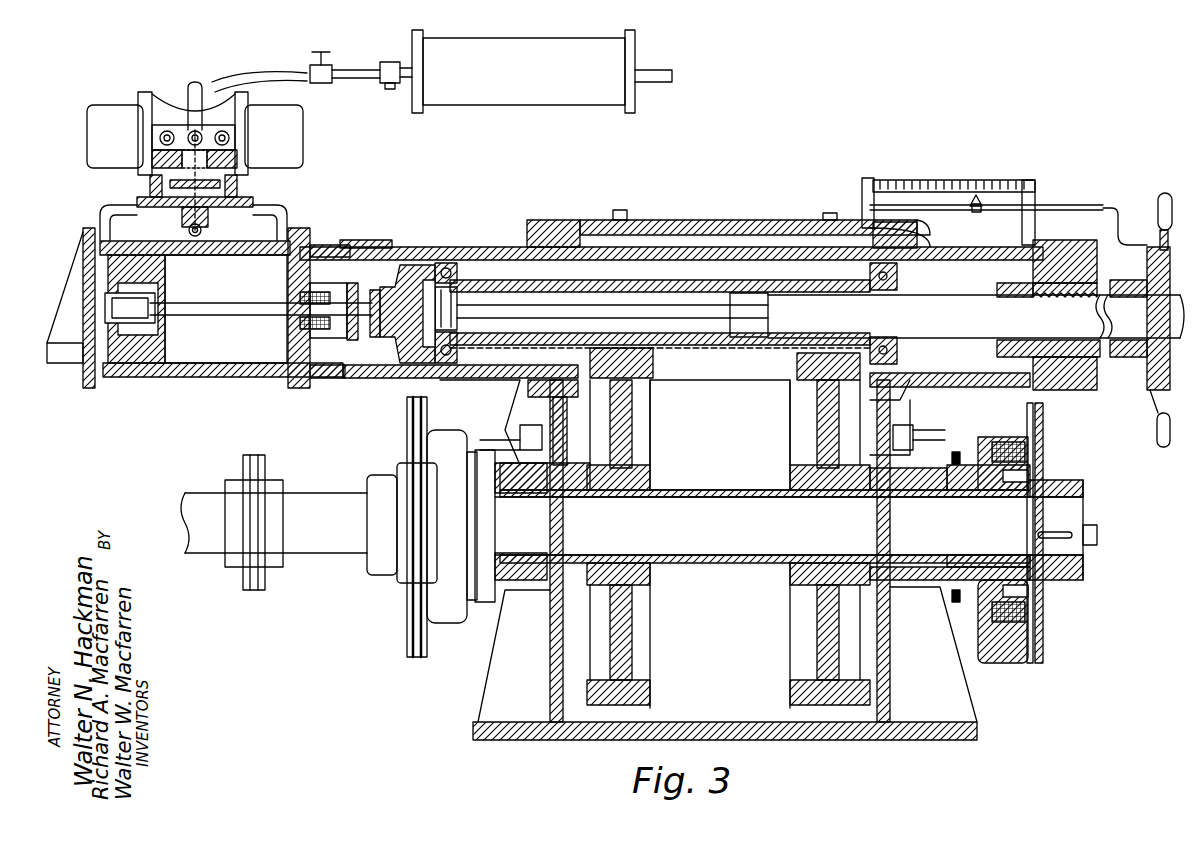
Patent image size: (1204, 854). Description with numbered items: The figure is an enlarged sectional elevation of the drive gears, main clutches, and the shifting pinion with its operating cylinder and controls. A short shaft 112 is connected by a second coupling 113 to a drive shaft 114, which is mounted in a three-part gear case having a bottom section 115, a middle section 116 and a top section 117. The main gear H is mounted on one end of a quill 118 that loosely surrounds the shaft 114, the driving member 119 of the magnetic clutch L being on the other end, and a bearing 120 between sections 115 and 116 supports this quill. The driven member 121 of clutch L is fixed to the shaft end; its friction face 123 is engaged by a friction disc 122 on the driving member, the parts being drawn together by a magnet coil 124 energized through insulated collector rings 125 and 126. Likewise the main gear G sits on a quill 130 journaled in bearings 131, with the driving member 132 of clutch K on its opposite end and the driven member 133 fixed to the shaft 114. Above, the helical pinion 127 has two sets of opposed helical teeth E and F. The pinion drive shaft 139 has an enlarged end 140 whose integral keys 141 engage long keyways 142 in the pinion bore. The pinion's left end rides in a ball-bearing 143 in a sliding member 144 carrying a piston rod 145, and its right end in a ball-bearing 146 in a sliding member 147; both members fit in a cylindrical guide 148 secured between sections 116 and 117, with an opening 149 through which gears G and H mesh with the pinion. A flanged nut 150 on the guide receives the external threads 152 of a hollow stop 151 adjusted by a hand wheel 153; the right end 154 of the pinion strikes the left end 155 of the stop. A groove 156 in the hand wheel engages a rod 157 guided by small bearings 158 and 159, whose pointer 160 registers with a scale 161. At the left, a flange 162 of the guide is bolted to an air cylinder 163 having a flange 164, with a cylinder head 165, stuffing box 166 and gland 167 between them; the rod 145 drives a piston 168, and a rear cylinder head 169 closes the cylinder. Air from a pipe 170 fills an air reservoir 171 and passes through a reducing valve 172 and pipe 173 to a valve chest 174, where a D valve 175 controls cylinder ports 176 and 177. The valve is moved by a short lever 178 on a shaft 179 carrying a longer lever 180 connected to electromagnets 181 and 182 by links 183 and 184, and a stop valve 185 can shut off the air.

The short shaft 112 is at (222, 495).
The second coupling 113 is at (248, 572).
The drive shaft 114 is at (789, 526).
The bottom section 115 is at (757, 720).
The middle section 116 is at (540, 405).
The top section 117 is at (790, 247).
The quill 118 is at (905, 497).
The driving member 119 is at (990, 497).
The bearing 120 is at (945, 560).
The driven member 121 is at (1085, 478).
The friction disc 122 is at (1025, 663).
The friction face 123 is at (1040, 663).
The magnet coil 124 is at (995, 437).
The insulated collector ring 125 is at (950, 600).
The insulated collector ring 126 is at (958, 602).
The helical pinion 127 is at (660, 280).
The quill 130 is at (642, 497).
The bearings 131 is at (565, 497).
The driving member 132 is at (450, 600).
The driven member 133 is at (402, 570).
The pinion drive shaft 139 is at (1154, 316).
The enlarged end 140 is at (755, 303).
The integral keys 141 is at (738, 323).
The long keyways 142 is at (705, 322).
The ball-bearing 143 is at (447, 263).
The sliding member 144 is at (412, 265).
The piston rod 145 is at (245, 307).
The ball-bearing 146 is at (897, 353).
The sliding member 147 is at (897, 275).
The cylindrical guide 148 is at (535, 222).
The opening 149 is at (720, 435).
The flanged nut 150 is at (1053, 262).
The hollow stop 151 is at (1062, 298).
The external threads 152 is at (1150, 250).
The hand wheel 153 is at (1150, 365).
The right end 154 is at (905, 345).
The left end 155 is at (997, 298).
The groove 156 is at (1150, 398).
The rod 157 is at (1115, 210).
The small bearing 158 is at (870, 178).
The small bearing 159 is at (1035, 190).
The pointer 160 is at (978, 212).
The scale 161 is at (985, 180).
The flange 162 is at (312, 380).
The air cylinder 163 is at (235, 366).
The flange 164 is at (292, 385).
The cylinder head 165 is at (300, 242).
The stuffing box 166 is at (340, 330).
The gland 167 is at (352, 345).
The piston 168 is at (195, 302).
The rear cylinder head 169 is at (88, 388).
The pipe 170 is at (648, 80).
The air reservoir 171 is at (523, 71).
The reducing valve 172 is at (387, 89).
The pipe 173 is at (388, 62).
The valve chest 174 is at (150, 183).
The D valve 175 is at (232, 181).
The cylinder port 176 is at (103, 240).
The cylinder port 177 is at (365, 229).
The short lever 178 is at (287, 210).
The shaft 179 is at (238, 180).
The longer lever 180 is at (195, 82).
The electromagnet 181 is at (115, 136).
The electromagnet 182 is at (274, 136).
The link 183 is at (165, 132).
The link 184 is at (213, 133).
The stop valve 185 is at (316, 62).
The shift pinion half E is at (503, 280).
The shift pinion half F is at (810, 280).
The main gear G is at (640, 427).
The main gear H is at (810, 427).
The main magnetic clutch K is at (390, 580).
The main magnetic clutch L is at (1045, 590).